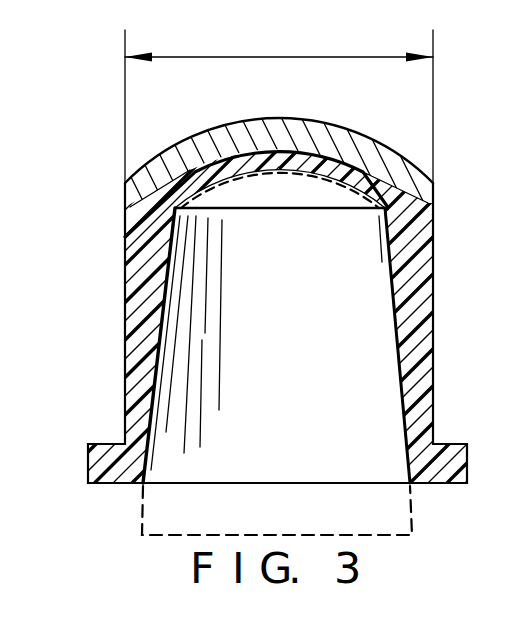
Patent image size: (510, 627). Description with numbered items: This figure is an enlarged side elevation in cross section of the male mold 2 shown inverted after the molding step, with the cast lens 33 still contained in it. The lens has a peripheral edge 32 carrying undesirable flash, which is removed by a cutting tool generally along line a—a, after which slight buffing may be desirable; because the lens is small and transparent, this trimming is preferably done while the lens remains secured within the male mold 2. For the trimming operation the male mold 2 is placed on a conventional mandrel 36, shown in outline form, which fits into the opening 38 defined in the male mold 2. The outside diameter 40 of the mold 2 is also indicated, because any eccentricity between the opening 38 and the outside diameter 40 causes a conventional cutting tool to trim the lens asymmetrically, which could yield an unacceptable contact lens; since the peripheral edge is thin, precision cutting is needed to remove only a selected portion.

The male mold 2 is at (124, 333).
The peripheral edge 32 is at (128, 182).
The cast lens 33 is at (316, 122).
The mandrel 36 is at (410, 516).
The opening 38 is at (194, 456).
The outside diameter 40 is at (270, 48).
The line a— a is at (128, 181).